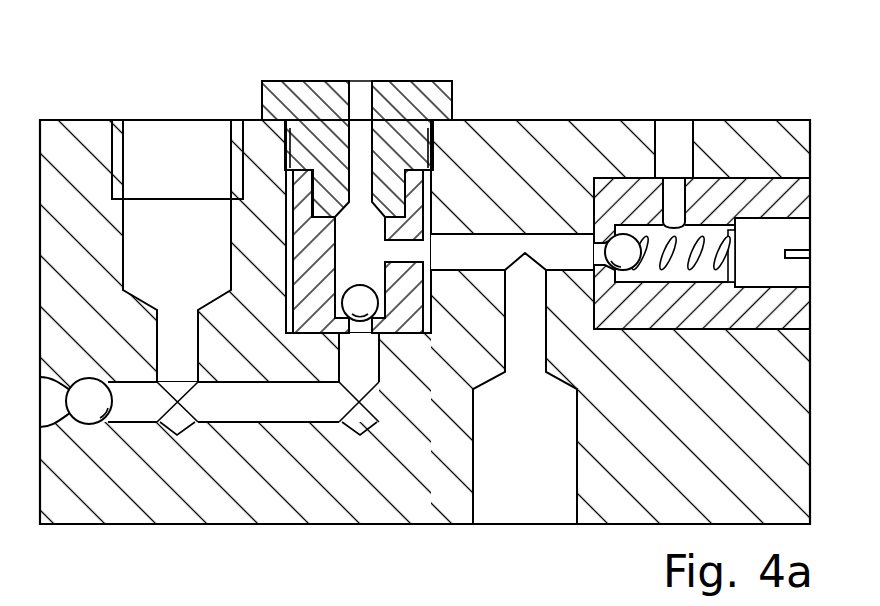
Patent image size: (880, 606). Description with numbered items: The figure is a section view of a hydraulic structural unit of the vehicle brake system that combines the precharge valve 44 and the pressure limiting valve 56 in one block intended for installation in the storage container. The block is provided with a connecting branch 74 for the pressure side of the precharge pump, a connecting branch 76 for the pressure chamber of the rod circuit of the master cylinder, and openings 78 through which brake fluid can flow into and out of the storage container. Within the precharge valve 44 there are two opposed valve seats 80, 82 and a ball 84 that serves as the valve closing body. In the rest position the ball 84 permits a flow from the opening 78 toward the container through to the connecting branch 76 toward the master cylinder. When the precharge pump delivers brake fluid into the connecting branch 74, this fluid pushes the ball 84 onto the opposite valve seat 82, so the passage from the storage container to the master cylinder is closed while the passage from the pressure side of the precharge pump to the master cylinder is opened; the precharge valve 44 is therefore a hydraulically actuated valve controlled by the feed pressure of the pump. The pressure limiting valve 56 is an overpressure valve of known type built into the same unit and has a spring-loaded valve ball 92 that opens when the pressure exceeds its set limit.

The connecting branch 74 is at (168, 163).
The precharge valve 44 is at (313, 256).
The opening 78 is at (358, 132).
The valve seat 82 is at (430, 248).
The spring-loaded valve ball 92 is at (630, 245).
The pressure limiting valve 56 is at (748, 188).
The valve seat 80 is at (354, 323).
The ball 84 is at (398, 335).
The connecting branch 76 is at (523, 488).